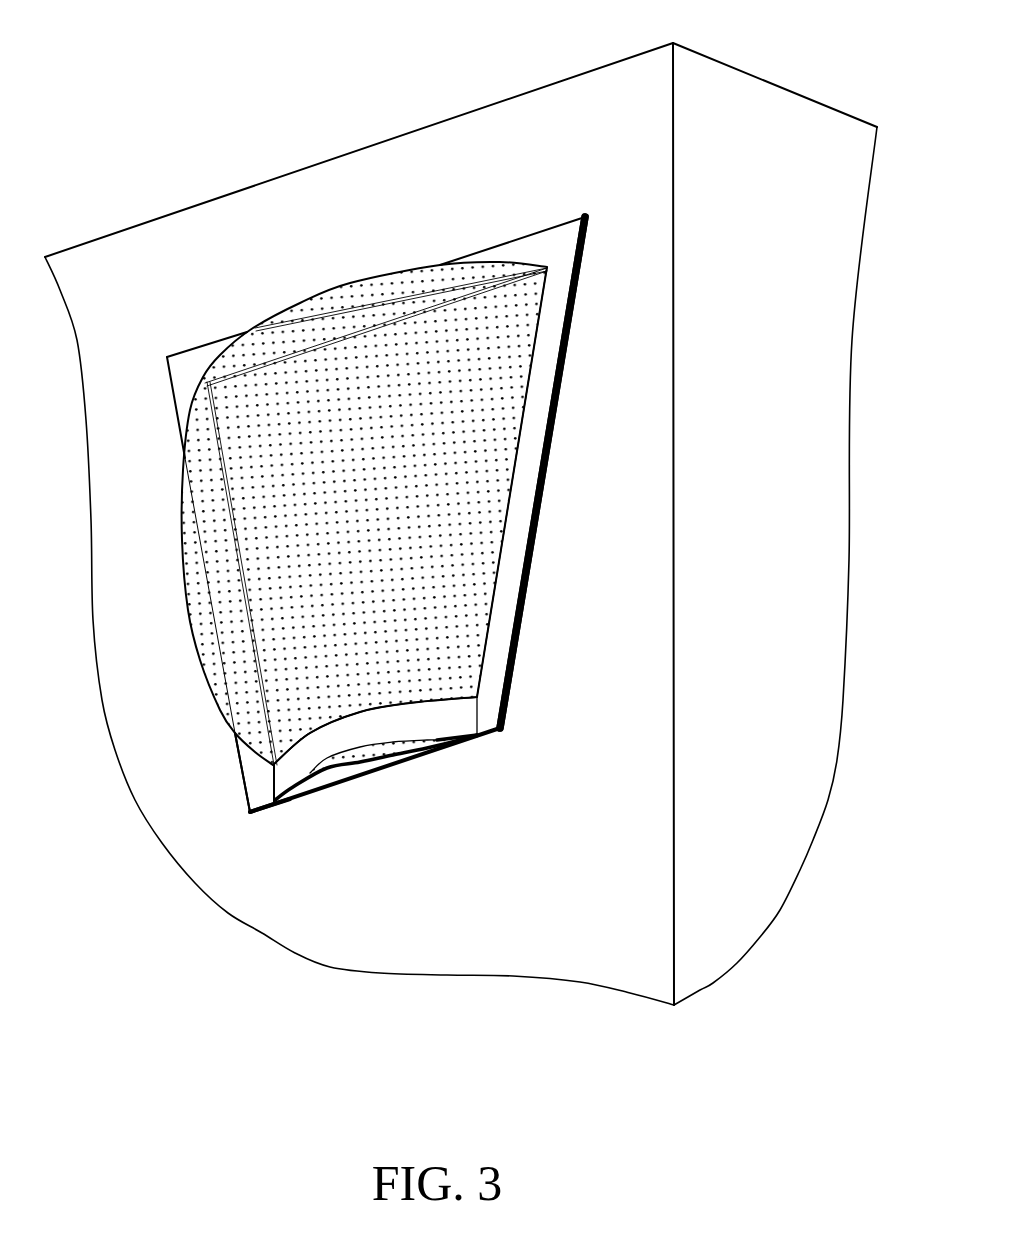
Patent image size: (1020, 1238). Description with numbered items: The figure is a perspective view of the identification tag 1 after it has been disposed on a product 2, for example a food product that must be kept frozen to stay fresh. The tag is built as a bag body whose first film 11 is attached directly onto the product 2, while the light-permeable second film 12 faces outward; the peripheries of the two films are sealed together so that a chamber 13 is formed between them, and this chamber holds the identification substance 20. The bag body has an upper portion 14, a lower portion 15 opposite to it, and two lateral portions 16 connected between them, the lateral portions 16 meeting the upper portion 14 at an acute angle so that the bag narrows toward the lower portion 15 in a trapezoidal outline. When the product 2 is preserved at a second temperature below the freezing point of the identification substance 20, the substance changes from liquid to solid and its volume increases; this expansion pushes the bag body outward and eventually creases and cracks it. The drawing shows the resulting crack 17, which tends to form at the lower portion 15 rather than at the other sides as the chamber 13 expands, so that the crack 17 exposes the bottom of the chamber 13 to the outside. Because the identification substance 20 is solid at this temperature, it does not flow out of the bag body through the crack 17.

The identification tag 1 is at (164, 446).
The product 2 is at (608, 88).
The first film 11 is at (370, 777).
The second film 12 is at (340, 740).
The chamber 13 is at (448, 573).
The upper portion 14 is at (477, 248).
The lower portion 15 is at (275, 810).
The lateral portions 16 is at (550, 476).
The crack 17 is at (442, 750).
The identification substance 20 is at (457, 412).